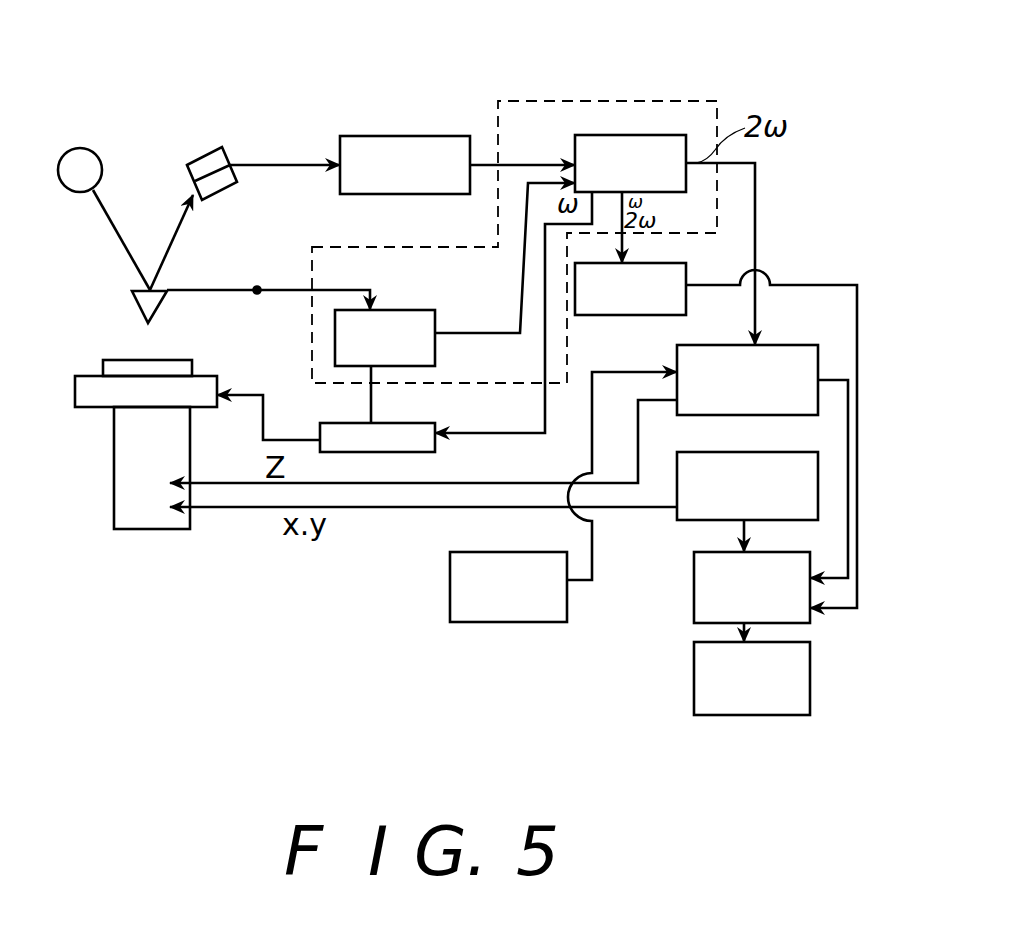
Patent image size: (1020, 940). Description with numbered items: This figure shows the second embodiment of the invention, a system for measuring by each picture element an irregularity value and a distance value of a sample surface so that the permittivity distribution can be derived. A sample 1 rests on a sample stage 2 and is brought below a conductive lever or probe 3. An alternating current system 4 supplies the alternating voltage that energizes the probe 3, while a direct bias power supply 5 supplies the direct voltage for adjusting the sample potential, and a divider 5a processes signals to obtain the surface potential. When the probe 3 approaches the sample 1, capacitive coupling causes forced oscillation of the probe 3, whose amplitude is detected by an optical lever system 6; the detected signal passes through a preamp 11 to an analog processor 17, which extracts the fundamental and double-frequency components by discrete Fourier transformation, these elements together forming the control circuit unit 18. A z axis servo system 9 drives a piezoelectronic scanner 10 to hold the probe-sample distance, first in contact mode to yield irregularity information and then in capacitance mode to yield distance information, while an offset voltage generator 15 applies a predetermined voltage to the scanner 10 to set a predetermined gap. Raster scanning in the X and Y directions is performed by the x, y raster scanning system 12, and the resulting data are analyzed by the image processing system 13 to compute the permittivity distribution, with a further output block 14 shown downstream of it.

The sample 1 is at (176, 360).
The sample stage 2 is at (97, 408).
The probe 3 is at (130, 308).
The alternating current system 4 is at (425, 310).
The power supply 5 is at (332, 423).
The divider 5a is at (624, 315).
The optical lever system 6 is at (79, 150).
The z axis servo system 9 is at (797, 345).
The piezoelectronic scanner 10 is at (150, 515).
The preamp 11 is at (432, 136).
The x, y raster scanning system 12 is at (695, 452).
The image processing system 13 is at (694, 590).
The display 14 is at (694, 677).
The offset voltage generator 15 is at (490, 608).
The analog processor 17 is at (647, 135).
The unit 18 is at (590, 101).